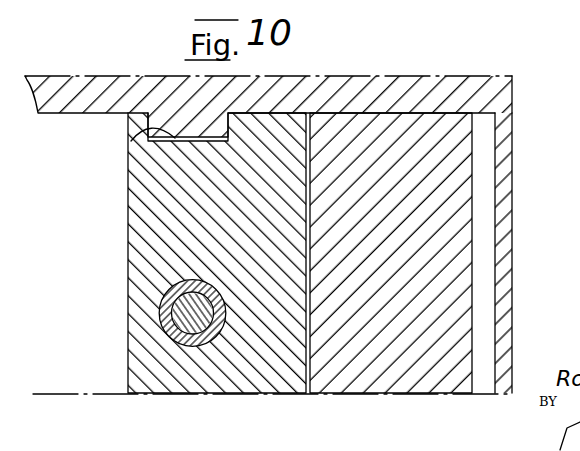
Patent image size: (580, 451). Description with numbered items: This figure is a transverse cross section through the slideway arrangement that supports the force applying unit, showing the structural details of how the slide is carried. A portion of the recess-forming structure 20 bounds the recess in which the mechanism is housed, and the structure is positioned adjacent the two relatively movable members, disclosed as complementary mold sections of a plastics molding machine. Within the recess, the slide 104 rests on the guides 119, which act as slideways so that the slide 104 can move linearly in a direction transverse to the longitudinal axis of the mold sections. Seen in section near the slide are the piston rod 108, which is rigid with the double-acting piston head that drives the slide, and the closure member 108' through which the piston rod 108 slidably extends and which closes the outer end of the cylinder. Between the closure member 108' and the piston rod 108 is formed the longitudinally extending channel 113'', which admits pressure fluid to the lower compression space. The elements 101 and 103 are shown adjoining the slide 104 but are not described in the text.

The cover plate 101 is at (84, 106).
The guides 119 is at (132, 137).
The slide 104 is at (140, 180).
The body section 103 is at (433, 188).
The recess-forming structure portion 20 is at (503, 248).
The piston rod 108 is at (155, 313).
The closure member 108' is at (140, 331).
The channel 113'' is at (138, 313).